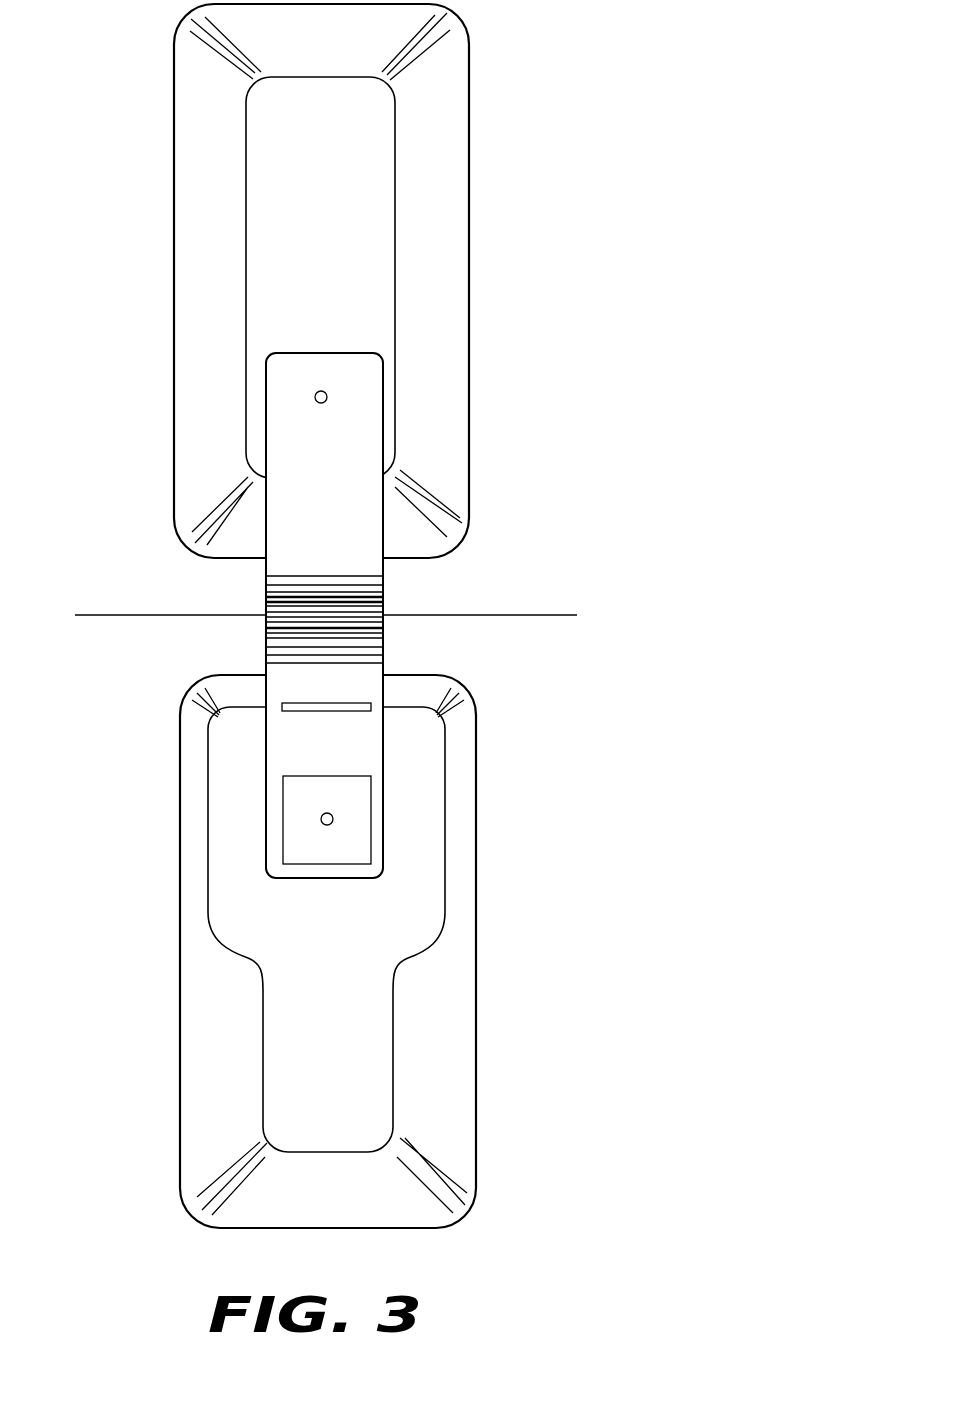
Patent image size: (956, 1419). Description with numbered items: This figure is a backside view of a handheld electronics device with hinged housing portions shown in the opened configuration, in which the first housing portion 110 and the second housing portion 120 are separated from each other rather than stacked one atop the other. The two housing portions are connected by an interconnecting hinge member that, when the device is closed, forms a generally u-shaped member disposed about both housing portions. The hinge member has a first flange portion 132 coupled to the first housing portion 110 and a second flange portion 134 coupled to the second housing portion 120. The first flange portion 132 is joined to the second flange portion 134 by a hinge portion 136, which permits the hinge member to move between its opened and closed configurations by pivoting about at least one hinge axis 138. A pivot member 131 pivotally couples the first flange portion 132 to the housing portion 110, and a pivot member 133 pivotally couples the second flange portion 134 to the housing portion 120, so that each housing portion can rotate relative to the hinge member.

The first housing portion 110 is at (447, 200).
The second housing portion 120 is at (458, 1112).
The pivot member 131 is at (327, 395).
The first flange portion 132 is at (353, 468).
The pivot member 133 is at (333, 818).
The second flange portion 134 is at (368, 732).
The hinge portion 136 is at (267, 583).
The hinge axis 138 is at (547, 613).